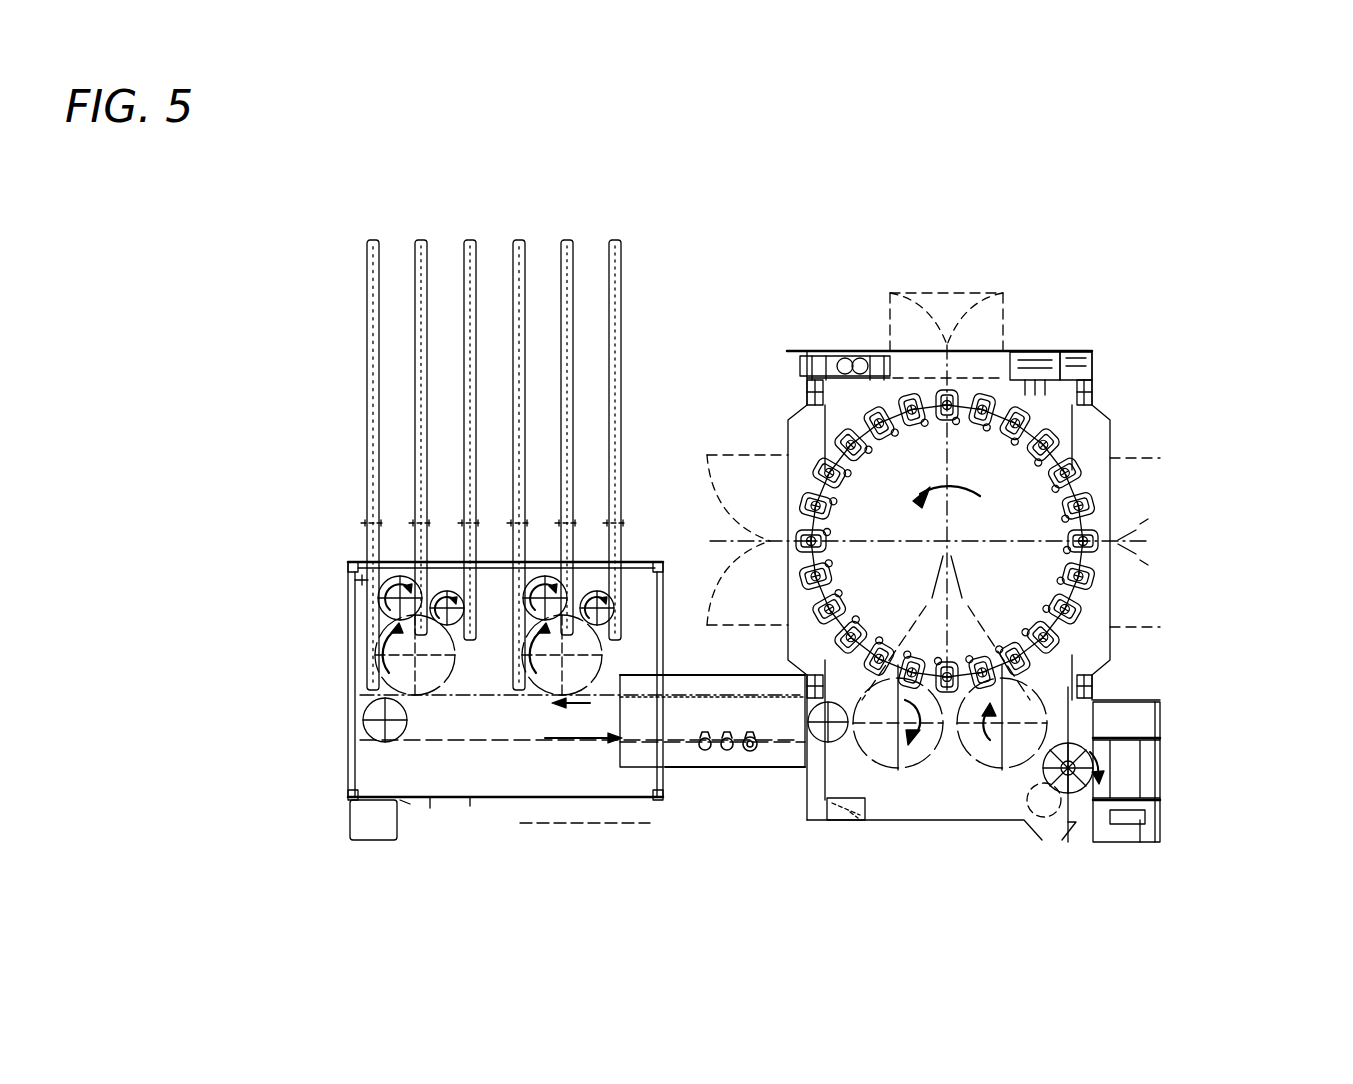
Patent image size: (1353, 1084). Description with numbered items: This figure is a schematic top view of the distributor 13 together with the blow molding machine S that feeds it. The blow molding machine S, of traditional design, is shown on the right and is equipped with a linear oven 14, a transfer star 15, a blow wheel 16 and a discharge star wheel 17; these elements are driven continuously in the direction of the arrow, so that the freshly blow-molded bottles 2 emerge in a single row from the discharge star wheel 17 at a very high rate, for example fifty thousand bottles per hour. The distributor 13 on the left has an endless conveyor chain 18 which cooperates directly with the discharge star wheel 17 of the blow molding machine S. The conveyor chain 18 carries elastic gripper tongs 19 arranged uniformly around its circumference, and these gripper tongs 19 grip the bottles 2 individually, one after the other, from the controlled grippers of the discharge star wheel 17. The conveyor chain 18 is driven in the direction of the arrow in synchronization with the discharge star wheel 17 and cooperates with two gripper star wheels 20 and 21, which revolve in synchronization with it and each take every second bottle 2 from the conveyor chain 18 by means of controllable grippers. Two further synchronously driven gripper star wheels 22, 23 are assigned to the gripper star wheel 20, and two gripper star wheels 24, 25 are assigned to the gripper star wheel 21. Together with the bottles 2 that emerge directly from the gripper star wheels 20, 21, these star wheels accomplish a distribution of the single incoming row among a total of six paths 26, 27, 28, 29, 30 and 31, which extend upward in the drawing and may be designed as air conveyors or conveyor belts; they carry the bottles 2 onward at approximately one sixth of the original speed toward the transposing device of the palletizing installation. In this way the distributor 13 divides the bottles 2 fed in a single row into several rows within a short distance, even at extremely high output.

The bottles 2 is at (372, 298).
The distributor 13 is at (274, 821).
The linear oven 14 is at (1160, 756).
The transfer star 15 is at (1002, 768).
The blow wheel 16 is at (1042, 434).
The discharge star wheel 17 is at (900, 768).
The conveyor chain 18 is at (520, 752).
The gripper tongs 19 is at (728, 752).
The gripper star wheel 20 is at (448, 688).
The gripper star wheel 21 is at (598, 674).
The gripper star wheel 22 is at (385, 606).
The gripper star wheel 23 is at (447, 590).
The gripper star wheel 24 is at (553, 590).
The gripper star wheel 25 is at (592, 600).
The path 26 is at (365, 429).
The path 27 is at (418, 402).
The path 28 is at (468, 404).
The path 29 is at (517, 429).
The path 30 is at (564, 402).
The path 31 is at (610, 404).
The blow molding machine S is at (1143, 500).